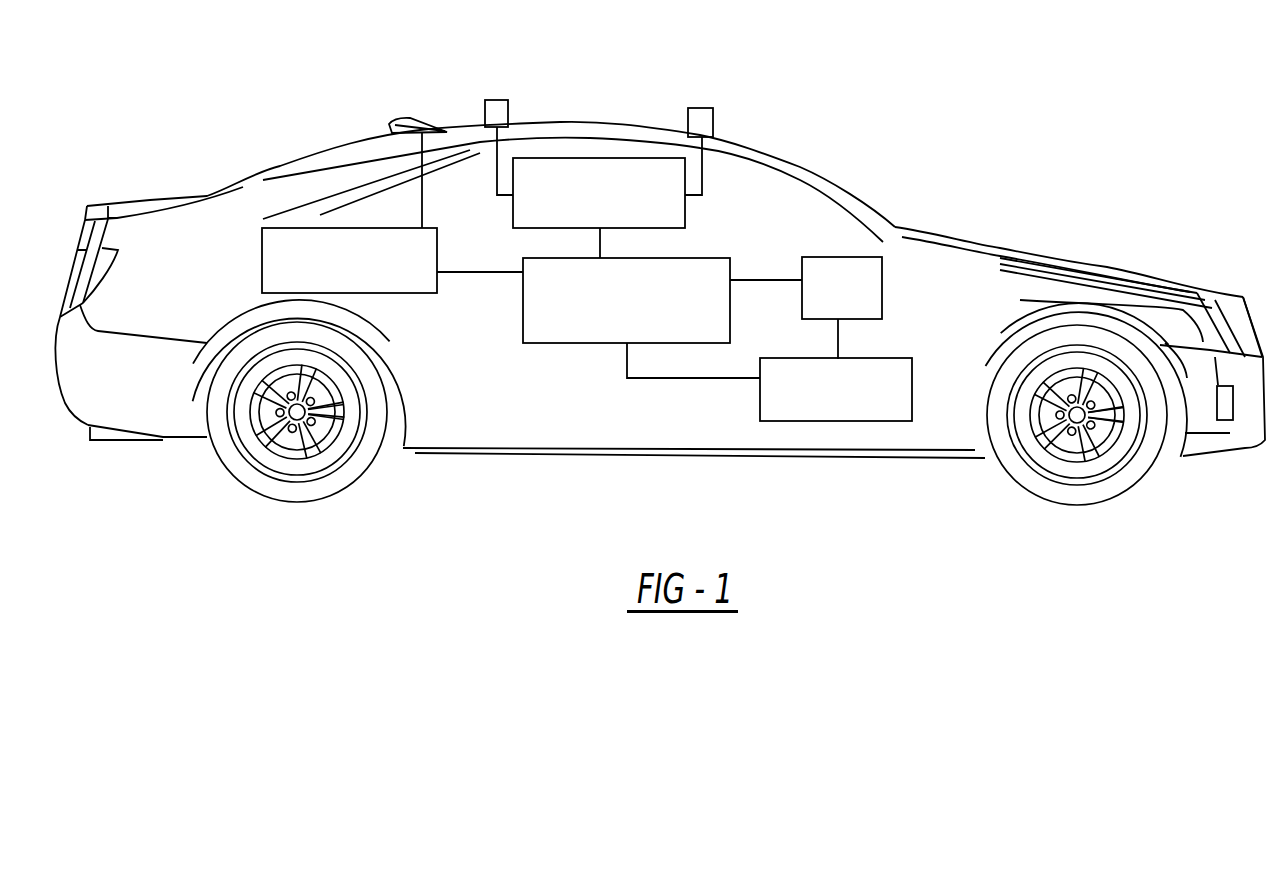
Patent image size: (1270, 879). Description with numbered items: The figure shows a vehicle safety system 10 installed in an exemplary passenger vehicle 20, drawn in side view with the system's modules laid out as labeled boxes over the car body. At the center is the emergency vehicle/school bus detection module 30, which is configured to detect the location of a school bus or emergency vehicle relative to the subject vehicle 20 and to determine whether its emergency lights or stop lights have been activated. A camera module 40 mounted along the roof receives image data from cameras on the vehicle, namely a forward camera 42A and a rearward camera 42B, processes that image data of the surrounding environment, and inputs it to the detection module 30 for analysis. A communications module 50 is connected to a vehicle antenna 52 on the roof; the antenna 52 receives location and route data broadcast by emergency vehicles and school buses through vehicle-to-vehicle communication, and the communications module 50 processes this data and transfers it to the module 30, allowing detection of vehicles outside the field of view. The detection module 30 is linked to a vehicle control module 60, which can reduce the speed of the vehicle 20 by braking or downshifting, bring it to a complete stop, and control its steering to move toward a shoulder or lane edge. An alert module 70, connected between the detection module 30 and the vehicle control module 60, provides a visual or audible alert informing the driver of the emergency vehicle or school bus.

The vehicle safety system 10 is at (243, 96).
The vehicle 20 is at (986, 130).
The emergency vehicle/school bus detection module 30 is at (548, 343).
The camera module 40 is at (687, 217).
The forward camera 42A is at (700, 108).
The rearward camera 42B is at (496, 99).
The communications module 50 is at (347, 228).
The vehicle antenna 52 is at (410, 118).
The vehicle control module 60 is at (810, 421).
The alert module 70 is at (846, 257).